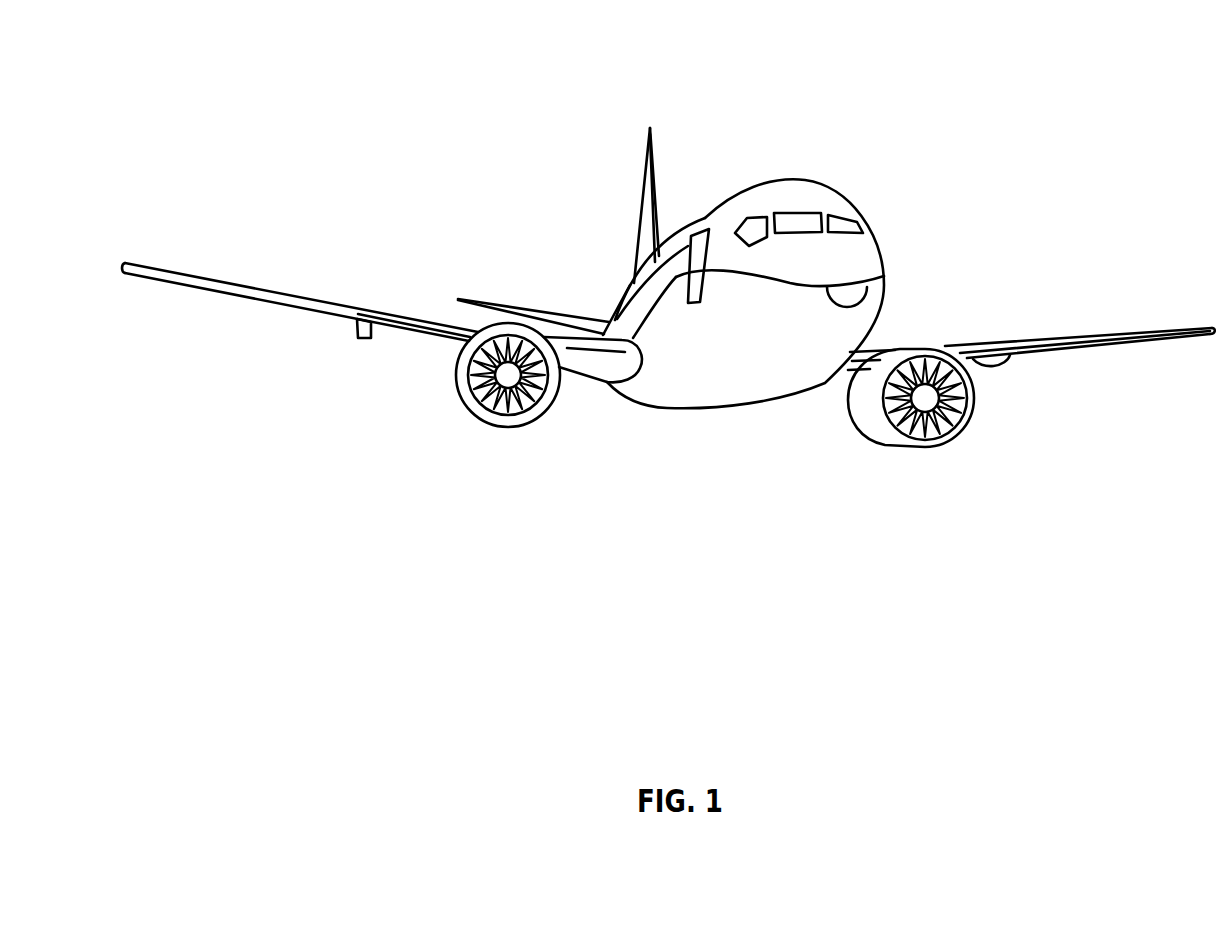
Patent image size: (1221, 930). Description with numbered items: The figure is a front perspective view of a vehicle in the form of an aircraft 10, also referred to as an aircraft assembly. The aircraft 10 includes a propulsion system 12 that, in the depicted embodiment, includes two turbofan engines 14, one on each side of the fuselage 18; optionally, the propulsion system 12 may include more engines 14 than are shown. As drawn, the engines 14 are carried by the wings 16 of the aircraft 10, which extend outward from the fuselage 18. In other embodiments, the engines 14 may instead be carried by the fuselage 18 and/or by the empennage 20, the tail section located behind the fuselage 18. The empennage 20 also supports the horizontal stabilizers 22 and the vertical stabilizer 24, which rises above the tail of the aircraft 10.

The aircraft 10 is at (395, 67).
The propulsion system 12 is at (1022, 438).
The turbofan engine 14 is at (503, 426).
The wing 16 is at (269, 291).
The fuselage 18 is at (884, 252).
The empennage 20 is at (637, 281).
The horizontal stabilizer 22 is at (498, 302).
The vertical stabilizer 24 is at (646, 168).